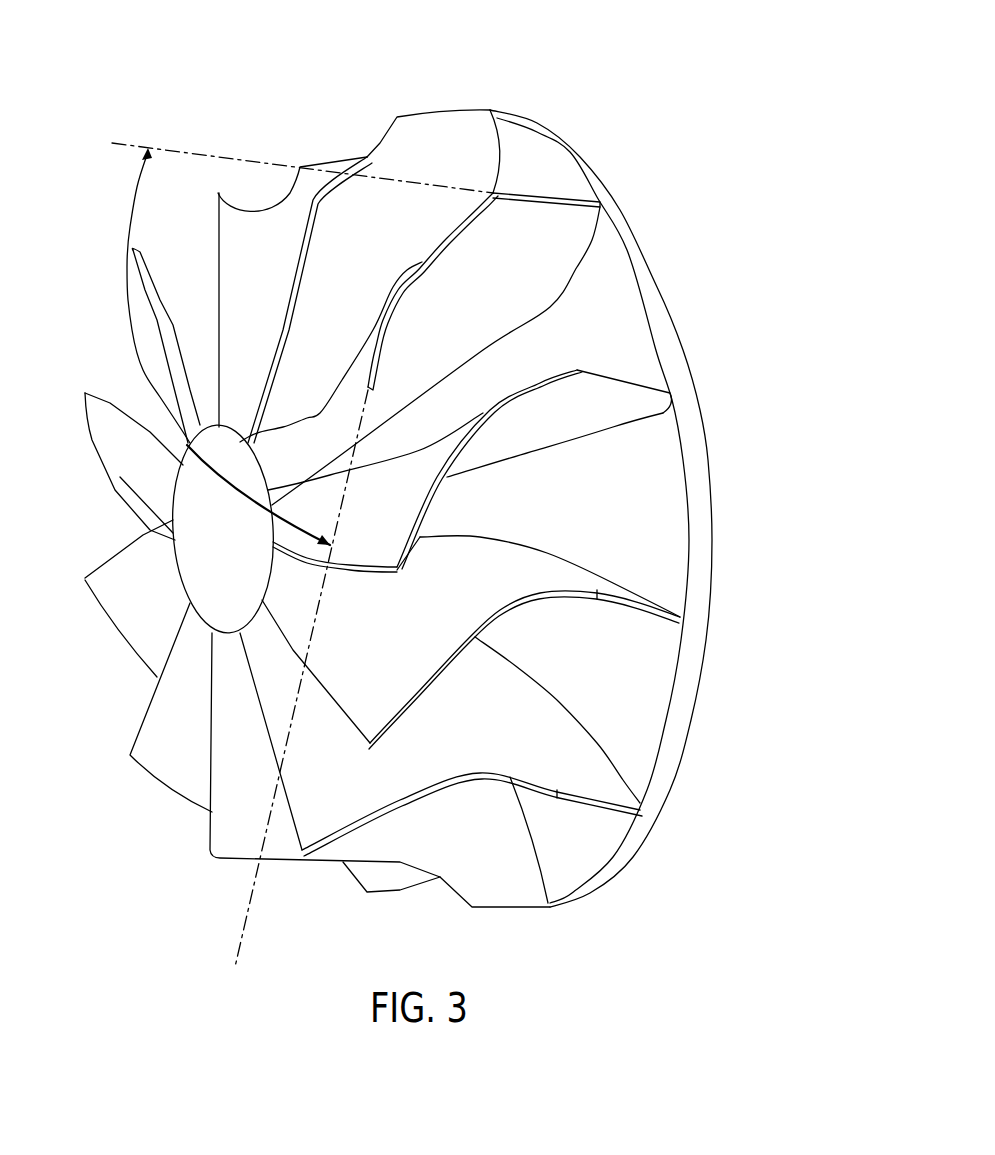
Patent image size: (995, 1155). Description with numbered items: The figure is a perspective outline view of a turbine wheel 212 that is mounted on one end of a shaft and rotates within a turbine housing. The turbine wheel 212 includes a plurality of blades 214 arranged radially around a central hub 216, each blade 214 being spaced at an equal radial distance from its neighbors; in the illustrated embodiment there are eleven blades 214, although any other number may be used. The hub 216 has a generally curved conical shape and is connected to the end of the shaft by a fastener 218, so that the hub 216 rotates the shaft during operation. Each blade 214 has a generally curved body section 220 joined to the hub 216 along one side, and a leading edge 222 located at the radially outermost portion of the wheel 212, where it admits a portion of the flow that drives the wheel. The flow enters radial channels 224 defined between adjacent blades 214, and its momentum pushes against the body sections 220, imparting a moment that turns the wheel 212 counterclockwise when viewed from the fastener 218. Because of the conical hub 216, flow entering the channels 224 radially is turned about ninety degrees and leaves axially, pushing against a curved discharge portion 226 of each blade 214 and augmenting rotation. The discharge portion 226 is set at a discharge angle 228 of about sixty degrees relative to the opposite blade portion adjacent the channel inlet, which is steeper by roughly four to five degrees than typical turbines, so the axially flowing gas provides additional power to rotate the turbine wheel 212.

The turbine wheel 212 is at (616, 64).
The blade 214 is at (420, 127).
The hub 216 is at (610, 306).
The fastener 218 is at (193, 550).
The body section 220 is at (553, 273).
The leading edge 222 is at (541, 197).
The radial channel 224 is at (600, 492).
The discharge portion 226 is at (352, 447).
The discharge angle 228 is at (132, 212).